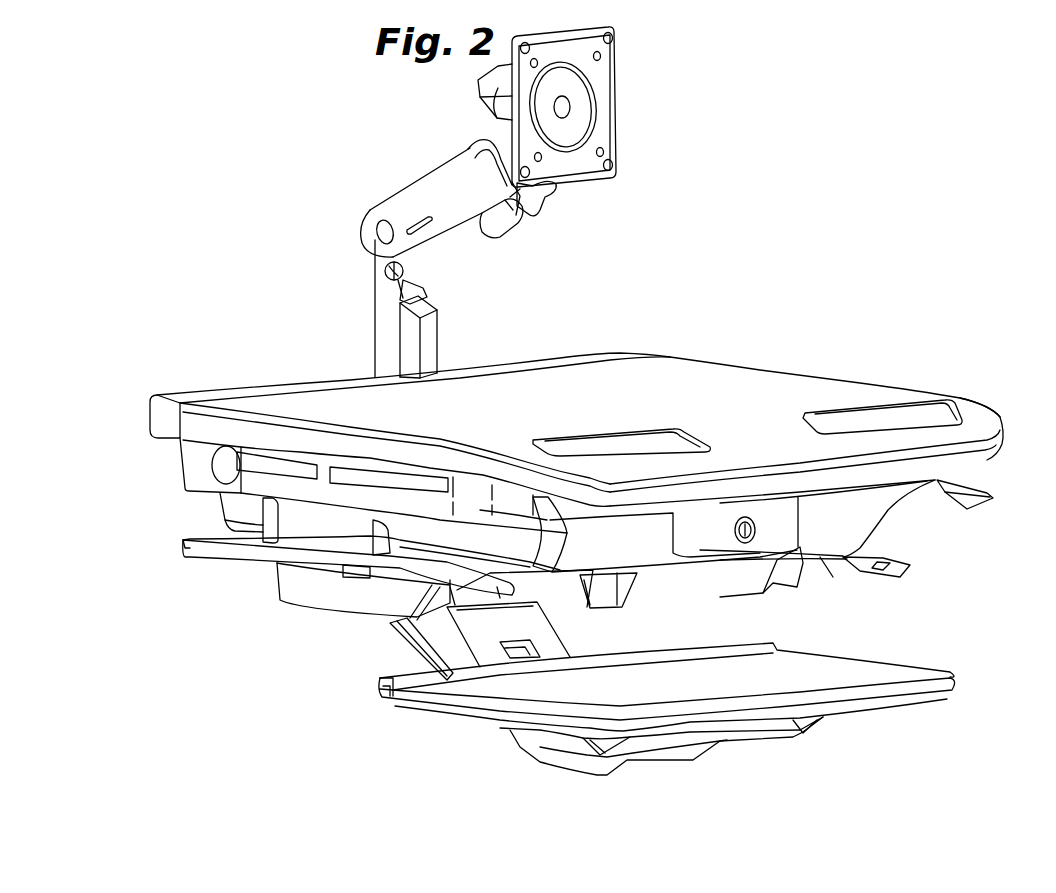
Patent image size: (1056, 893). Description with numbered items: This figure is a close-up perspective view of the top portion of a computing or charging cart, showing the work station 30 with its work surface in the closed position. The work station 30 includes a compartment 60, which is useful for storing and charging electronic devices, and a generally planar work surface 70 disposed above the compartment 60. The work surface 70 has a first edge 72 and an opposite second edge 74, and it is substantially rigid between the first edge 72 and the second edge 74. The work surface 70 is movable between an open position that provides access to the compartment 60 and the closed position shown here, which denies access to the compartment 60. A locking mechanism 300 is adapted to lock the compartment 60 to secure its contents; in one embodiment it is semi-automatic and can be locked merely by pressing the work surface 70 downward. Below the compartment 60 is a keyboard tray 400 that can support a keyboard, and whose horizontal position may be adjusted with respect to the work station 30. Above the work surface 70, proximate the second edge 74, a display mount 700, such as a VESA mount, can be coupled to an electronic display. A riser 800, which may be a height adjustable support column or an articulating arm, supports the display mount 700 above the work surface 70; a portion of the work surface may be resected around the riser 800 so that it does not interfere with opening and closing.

The work station 30 is at (717, 322).
The compartment 60 is at (857, 530).
The work surface 70 is at (772, 386).
The first edge 72 is at (983, 418).
The second edge 74 is at (512, 360).
The locking mechanism 300 is at (757, 532).
The keyboard tray 400 is at (523, 687).
The display mount 700 is at (597, 117).
The riser 800 is at (380, 308).